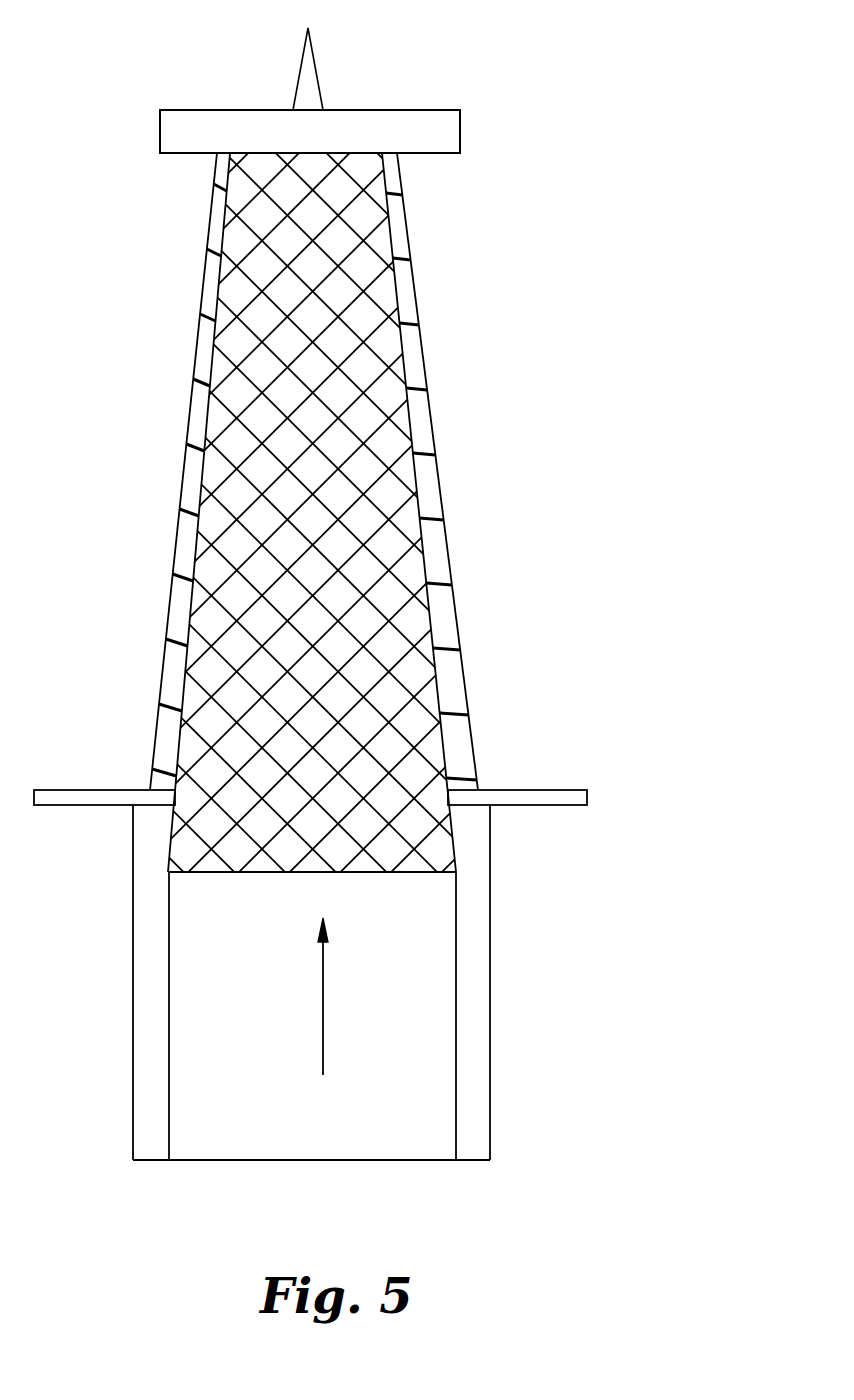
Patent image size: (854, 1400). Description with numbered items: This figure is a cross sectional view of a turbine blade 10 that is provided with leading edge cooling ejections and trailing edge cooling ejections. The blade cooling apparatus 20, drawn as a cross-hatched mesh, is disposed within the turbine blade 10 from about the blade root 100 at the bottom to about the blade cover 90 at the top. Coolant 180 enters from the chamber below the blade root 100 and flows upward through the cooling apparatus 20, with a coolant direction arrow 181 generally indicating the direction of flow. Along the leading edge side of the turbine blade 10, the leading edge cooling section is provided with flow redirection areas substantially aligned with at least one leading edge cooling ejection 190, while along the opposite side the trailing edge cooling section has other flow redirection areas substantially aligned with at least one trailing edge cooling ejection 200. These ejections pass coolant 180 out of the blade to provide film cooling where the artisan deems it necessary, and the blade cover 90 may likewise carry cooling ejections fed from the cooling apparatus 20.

The turbine blade 10 is at (427, 444).
The cooling apparatus 20 is at (385, 298).
The blade cover 90 is at (262, 128).
The blade root 100 is at (545, 808).
The coolant 180 is at (262, 1120).
The coolant direction arrows 181 is at (323, 1008).
The leading edge cooling ejection 190 is at (180, 518).
The trailing edge cooling ejection 200 is at (425, 413).